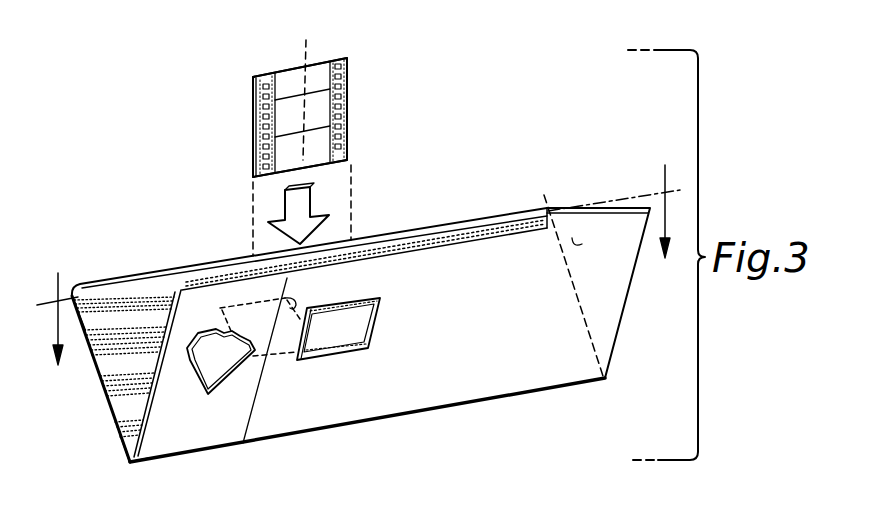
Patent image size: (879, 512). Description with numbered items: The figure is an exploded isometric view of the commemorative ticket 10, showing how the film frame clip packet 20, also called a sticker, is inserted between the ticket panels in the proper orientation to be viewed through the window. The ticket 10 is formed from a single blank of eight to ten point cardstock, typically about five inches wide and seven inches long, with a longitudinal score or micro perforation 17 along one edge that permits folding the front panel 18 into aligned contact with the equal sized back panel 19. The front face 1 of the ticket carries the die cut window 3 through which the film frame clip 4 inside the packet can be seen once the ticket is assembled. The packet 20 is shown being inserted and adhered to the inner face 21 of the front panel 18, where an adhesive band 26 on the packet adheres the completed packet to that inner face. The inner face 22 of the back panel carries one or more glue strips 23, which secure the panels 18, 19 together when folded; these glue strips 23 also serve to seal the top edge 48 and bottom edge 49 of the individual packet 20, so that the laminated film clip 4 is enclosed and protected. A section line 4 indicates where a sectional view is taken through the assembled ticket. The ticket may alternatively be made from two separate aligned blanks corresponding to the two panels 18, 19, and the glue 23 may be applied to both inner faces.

The front face 1 is at (470, 321).
The die cut window 3 is at (310, 305).
The film frame clip 4 is at (358, 198).
The commemorative ticket 10 is at (353, 322).
The longitudinal score or micro perforation 17 is at (128, 462).
The front panel 18 is at (608, 212).
The back panel 19 is at (397, 233).
The film frame clip packet 20 is at (328, 113).
The inner face of the front panel 21 is at (573, 273).
The inner face of the back panel 22 is at (153, 316).
The glue strip 23 is at (118, 297).
The adhesive band 26 is at (258, 105).
The top edge of the packet 48 is at (277, 75).
The bottom edge of the packet 49 is at (324, 167).